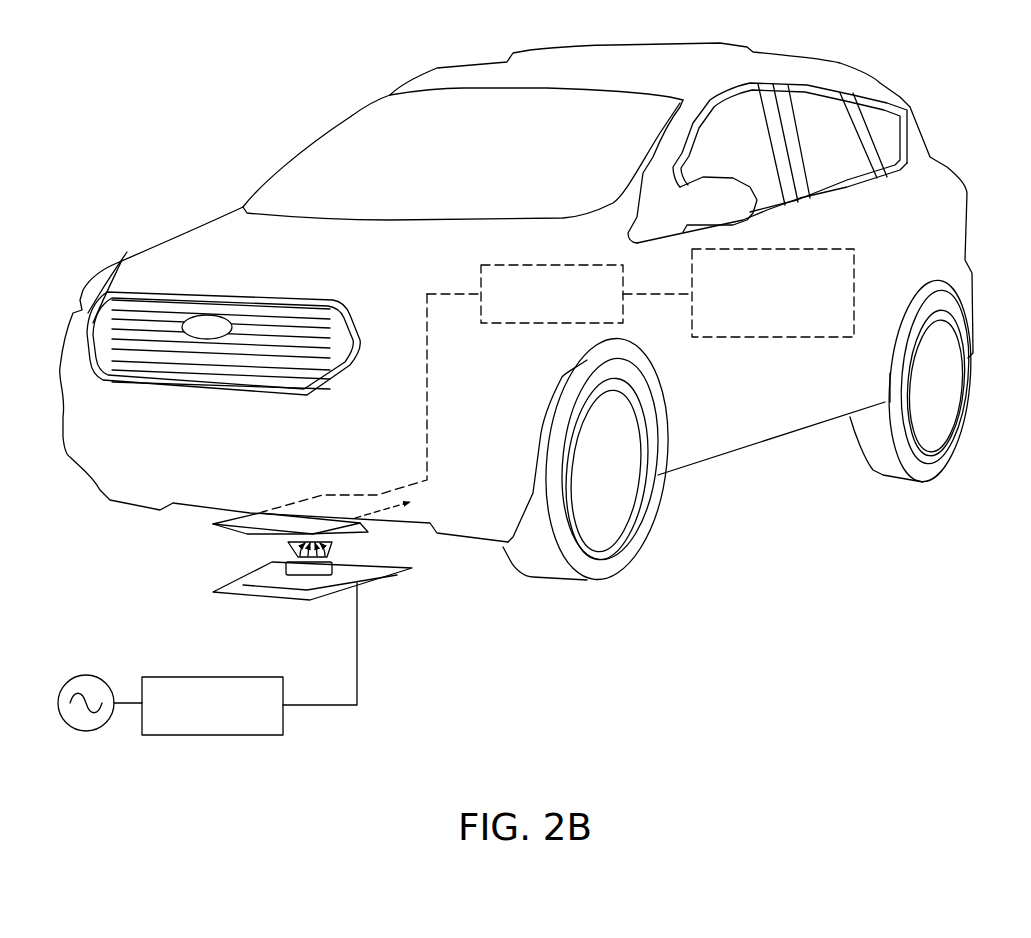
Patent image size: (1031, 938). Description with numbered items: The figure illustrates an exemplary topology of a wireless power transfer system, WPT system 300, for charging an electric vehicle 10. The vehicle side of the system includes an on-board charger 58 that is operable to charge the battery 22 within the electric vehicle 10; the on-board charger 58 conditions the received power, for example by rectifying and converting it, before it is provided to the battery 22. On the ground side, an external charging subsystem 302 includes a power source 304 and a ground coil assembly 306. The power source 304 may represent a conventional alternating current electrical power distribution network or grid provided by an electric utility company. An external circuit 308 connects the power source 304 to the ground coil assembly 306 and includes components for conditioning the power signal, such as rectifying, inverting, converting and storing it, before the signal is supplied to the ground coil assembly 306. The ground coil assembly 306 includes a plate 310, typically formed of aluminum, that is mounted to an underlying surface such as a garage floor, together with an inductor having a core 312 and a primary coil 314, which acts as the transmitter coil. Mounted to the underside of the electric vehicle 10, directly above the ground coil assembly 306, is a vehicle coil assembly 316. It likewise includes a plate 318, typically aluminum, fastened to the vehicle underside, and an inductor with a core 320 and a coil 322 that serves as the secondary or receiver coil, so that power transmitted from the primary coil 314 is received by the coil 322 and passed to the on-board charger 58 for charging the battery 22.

The electric vehicle 10 is at (947, 158).
The battery 22 is at (857, 268).
The on-board charger 58 is at (539, 309).
The WPT system 300 is at (497, 655).
The external charging subsystem 302 is at (149, 673).
The power source 304 is at (87, 731).
The ground coil assembly 306 is at (343, 633).
The external circuit 308 is at (197, 721).
The plate 310 is at (253, 597).
The core 312 is at (287, 587).
The primary coil 314 is at (345, 568).
The vehicle coil assembly 316 is at (324, 459).
The plate 318 is at (233, 528).
The core 320 is at (260, 540).
The coil 322 is at (347, 528).